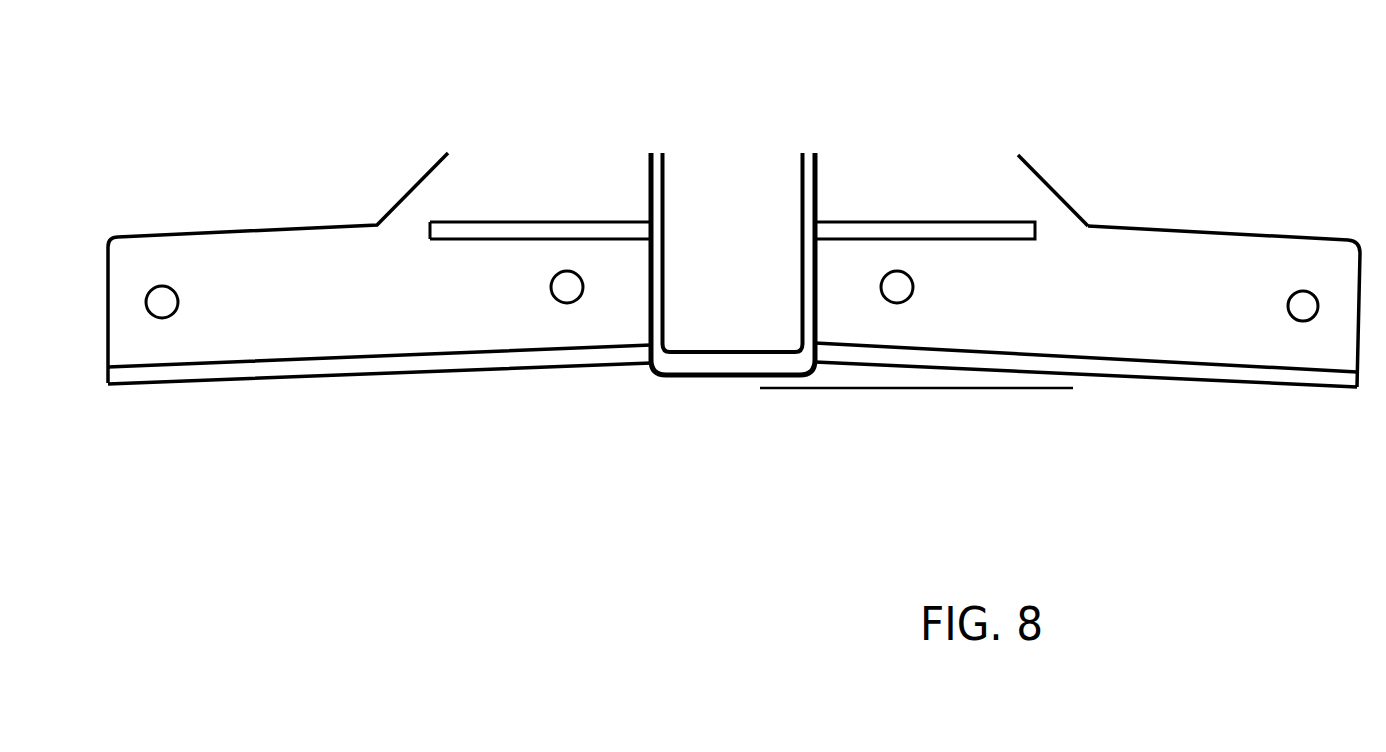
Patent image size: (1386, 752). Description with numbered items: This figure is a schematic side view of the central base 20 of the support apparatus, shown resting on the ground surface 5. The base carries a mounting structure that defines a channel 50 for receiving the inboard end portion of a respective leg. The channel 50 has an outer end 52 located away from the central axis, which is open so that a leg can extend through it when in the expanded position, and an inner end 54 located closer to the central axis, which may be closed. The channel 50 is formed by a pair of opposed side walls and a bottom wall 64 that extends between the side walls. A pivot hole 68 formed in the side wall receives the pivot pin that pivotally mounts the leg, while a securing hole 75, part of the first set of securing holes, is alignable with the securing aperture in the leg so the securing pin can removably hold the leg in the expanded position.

The central base 20 is at (990, 110).
The channel 50 is at (270, 281).
The outer end 52 is at (107, 335).
The bottom wall 64 is at (340, 367).
The securing hole 75 is at (162, 286).
The pivot hole 68 is at (568, 303).
The inner end 54 is at (650, 313).
The ground surface 5 is at (878, 390).